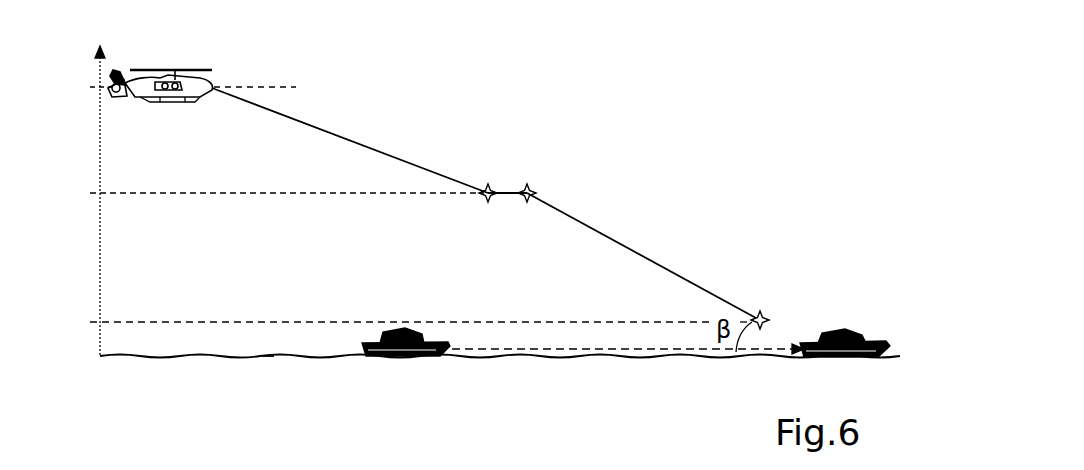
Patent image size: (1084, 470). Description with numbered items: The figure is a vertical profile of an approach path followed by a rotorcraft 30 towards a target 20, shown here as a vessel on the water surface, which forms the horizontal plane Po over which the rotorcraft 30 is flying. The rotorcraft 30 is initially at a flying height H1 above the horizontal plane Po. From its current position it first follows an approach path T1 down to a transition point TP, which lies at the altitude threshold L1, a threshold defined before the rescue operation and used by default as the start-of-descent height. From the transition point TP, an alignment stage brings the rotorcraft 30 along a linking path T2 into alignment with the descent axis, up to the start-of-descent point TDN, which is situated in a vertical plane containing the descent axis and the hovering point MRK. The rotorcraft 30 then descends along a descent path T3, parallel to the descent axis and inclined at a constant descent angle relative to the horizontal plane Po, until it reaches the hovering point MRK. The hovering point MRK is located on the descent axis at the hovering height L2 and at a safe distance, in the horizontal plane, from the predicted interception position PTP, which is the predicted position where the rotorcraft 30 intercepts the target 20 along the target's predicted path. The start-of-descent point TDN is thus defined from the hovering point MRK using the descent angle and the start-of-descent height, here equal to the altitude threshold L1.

The rotorcraft 30 is at (186, 72).
The target 20 is at (408, 330).
The predicted interception position PTP is at (880, 344).
The approach path T1 is at (310, 129).
The linking path T2 is at (505, 194).
The descent path T3 is at (628, 238).
The transition point TP is at (487, 179).
The start-of-descent point TDN is at (543, 179).
The hovering point MRK is at (780, 306).
The horizontal plane Po is at (268, 348).
The flying height H1 is at (176, 88).
The altitude threshold L1 is at (270, 194).
The hovering height L2 is at (404, 324).